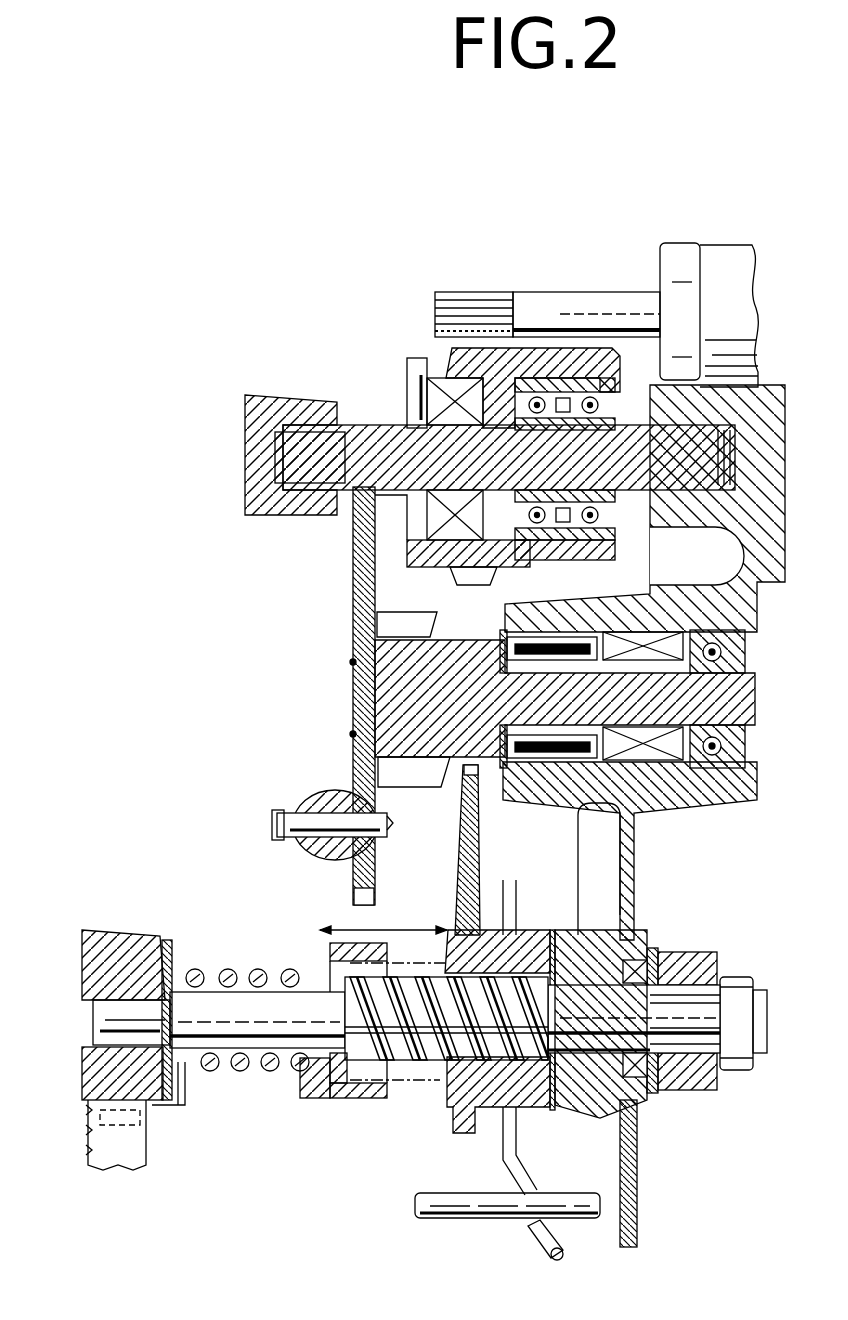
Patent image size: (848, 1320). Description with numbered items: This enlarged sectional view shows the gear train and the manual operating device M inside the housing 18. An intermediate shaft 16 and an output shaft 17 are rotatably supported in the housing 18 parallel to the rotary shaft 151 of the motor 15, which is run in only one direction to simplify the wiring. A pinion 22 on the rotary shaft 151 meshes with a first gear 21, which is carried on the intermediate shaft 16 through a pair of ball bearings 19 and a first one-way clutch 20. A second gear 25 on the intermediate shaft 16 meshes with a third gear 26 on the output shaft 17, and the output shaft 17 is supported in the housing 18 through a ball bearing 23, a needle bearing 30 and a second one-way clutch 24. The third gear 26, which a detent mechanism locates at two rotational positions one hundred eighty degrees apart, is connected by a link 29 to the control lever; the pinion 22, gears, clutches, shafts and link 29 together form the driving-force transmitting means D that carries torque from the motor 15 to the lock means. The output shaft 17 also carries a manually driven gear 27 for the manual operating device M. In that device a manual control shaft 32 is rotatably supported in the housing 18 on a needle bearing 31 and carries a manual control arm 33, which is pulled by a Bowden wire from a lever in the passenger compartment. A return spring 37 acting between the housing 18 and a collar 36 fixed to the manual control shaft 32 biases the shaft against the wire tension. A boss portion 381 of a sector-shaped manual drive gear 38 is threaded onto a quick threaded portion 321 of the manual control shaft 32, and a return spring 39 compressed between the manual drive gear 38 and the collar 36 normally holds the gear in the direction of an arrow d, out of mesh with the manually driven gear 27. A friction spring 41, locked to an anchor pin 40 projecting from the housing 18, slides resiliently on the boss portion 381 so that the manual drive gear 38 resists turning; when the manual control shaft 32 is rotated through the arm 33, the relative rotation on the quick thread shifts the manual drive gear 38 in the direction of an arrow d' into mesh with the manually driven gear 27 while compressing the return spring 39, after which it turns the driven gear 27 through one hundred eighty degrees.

The motor 15 is at (709, 315).
The rotary shaft 151 is at (607, 296).
The pinion 22 is at (484, 300).
The first one-way clutch 20 is at (437, 378).
The second gear 25 is at (370, 427).
The intermediate shaft 16 is at (509, 457).
The third gear 26 is at (353, 603).
The driving-force transmitting means D is at (325, 565).
The manually driven gear 27 is at (406, 626).
The ball bearings 19 is at (563, 565).
The first gear 21 is at (470, 588).
The needle bearing 30 is at (563, 595).
The ball bearing 23 is at (745, 650).
The output shaft 17 is at (565, 698).
The link 29 is at (318, 795).
The manual drive gear 38 is at (457, 812).
The second one-way clutch 24 is at (580, 800).
The housing 18 is at (702, 810).
The boss portion 381 is at (533, 930).
The arrow d' is at (321, 907).
The arrow d is at (434, 907).
The manual control arm 33 is at (688, 952).
The manual control shaft 32 is at (532, 1018).
The return spring 37 is at (212, 1070).
The collar 36 is at (357, 1100).
The quick threaded portion 321 is at (385, 1100).
The return spring 39 is at (442, 1095).
The needle bearing 31 is at (603, 1095).
The friction spring 41 is at (505, 1160).
The anchor pin 40 is at (491, 1200).
The manual operating device M is at (398, 1168).